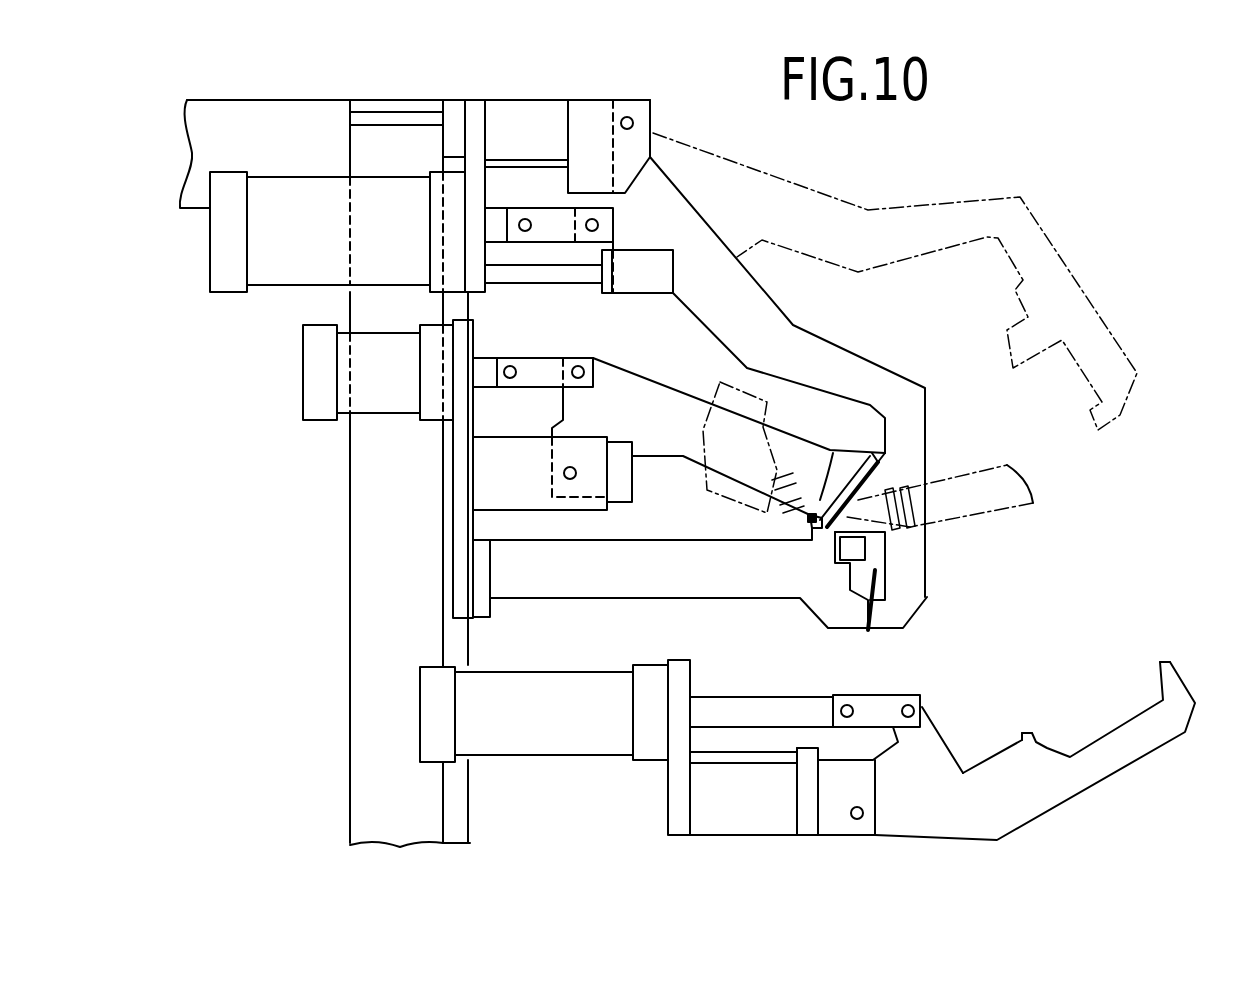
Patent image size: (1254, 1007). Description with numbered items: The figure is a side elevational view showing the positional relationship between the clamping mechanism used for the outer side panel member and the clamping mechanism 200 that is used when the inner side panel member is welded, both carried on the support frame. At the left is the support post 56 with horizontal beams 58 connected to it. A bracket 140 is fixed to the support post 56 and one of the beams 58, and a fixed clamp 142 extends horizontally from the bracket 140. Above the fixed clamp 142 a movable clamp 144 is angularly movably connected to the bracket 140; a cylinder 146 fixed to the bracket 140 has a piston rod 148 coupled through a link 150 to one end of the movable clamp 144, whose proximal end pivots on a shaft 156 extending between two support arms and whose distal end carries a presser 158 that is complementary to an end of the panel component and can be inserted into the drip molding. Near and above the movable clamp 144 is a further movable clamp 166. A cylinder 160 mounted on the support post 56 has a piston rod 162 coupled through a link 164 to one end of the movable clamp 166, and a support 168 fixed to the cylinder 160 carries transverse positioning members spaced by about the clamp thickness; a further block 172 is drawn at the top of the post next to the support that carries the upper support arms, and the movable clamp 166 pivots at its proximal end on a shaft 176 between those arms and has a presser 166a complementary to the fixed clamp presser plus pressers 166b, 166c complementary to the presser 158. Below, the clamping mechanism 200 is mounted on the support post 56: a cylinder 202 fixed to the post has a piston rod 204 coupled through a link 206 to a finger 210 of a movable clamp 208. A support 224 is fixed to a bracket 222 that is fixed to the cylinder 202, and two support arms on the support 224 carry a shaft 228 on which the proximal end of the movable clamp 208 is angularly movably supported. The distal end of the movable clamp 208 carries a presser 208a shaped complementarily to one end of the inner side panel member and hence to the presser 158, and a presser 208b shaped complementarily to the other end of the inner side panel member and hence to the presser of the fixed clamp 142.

The support post 56 is at (385, 690).
The horizontal beams 58 is at (283, 140).
The bracket 140 is at (465, 547).
The fixed clamp 142 is at (738, 585).
The movable clamp 144 is at (652, 400).
The cylinder 146 is at (360, 380).
The piston rod 148 is at (485, 367).
The link 150 is at (540, 373).
The shaft 156 is at (571, 480).
The presser 158 is at (820, 500).
The cylinder 160 is at (290, 265).
The piston rod 162 is at (494, 218).
The link 164 is at (553, 228).
The movable clamp 166 is at (1055, 255).
The presser 166a is at (880, 616).
The presser 166b is at (850, 517).
The presser 166c is at (880, 470).
The support 168 is at (587, 278).
The guide block 172 is at (538, 110).
The shaft 176 is at (634, 123).
The clamping mechanism 200 is at (798, 843).
The cylinder 202 is at (566, 735).
The piston rod 204 is at (775, 700).
The link 206 is at (873, 708).
The movable clamp 208 is at (1128, 730).
The presser 208a is at (1163, 665).
The presser 208b is at (1035, 728).
The finger 210 is at (928, 715).
The bracket 222 is at (668, 812).
The support 224 is at (720, 812).
The shaft 228 is at (862, 815).